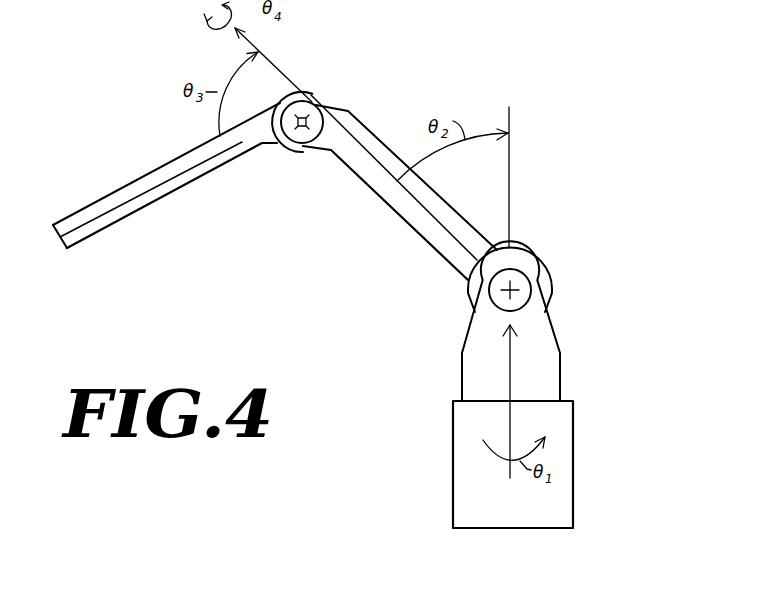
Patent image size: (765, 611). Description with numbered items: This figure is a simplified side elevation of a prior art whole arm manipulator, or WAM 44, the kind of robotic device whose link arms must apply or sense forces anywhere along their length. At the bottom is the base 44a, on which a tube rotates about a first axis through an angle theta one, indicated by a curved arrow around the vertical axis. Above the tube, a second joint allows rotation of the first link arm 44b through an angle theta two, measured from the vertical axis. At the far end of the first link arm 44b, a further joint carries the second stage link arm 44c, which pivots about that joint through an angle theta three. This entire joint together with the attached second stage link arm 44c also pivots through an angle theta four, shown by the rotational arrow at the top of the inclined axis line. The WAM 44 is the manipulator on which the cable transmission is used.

The whole arm manipulator (WAM) 44 is at (522, 108).
The base 44a is at (573, 447).
The first link arm 44b is at (380, 132).
The second stage link arm 44c is at (183, 156).